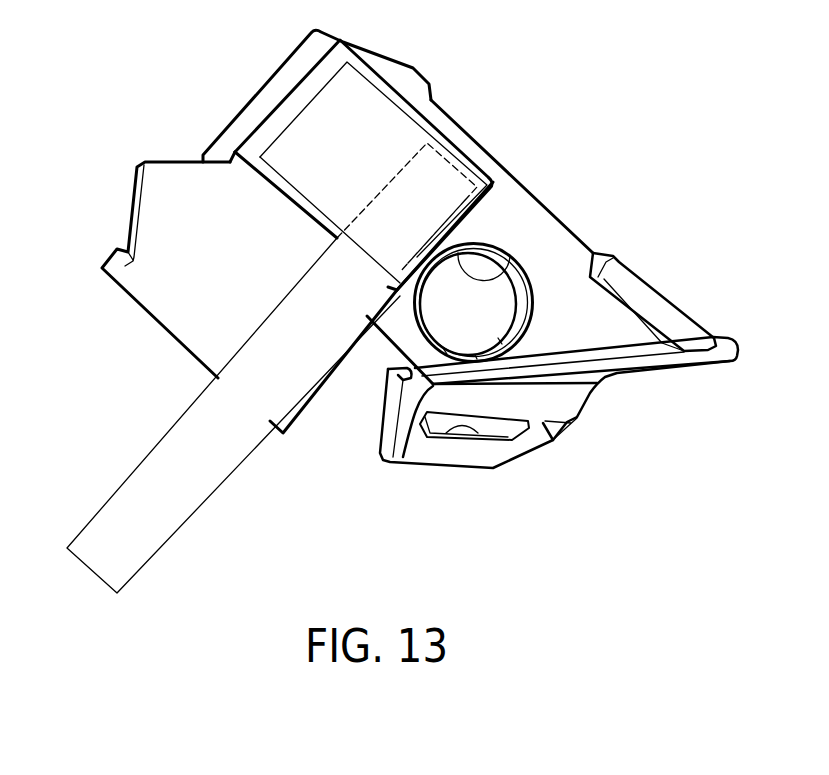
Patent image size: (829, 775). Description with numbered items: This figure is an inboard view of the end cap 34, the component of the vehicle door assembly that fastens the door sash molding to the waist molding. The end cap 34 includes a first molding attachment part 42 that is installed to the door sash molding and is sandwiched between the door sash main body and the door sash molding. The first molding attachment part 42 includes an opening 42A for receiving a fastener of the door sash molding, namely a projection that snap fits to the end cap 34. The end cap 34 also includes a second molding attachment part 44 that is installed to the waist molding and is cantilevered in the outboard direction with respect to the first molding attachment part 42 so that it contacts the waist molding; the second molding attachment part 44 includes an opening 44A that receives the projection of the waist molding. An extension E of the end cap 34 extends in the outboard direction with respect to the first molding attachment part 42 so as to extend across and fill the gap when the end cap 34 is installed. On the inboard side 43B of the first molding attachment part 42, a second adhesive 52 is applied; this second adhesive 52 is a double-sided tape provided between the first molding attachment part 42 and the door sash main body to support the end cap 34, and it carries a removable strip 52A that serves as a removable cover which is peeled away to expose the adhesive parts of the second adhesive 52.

The end cap 34 is at (634, 132).
The first molding attachment part 42 is at (490, 141).
The opening 42A is at (502, 264).
The inboard side 43B is at (282, 117).
The second molding attachment part 44 is at (568, 402).
The opening 44A is at (477, 433).
The second adhesive 52 is at (363, 113).
The removable strip 52A is at (148, 510).
The extension E is at (178, 305).